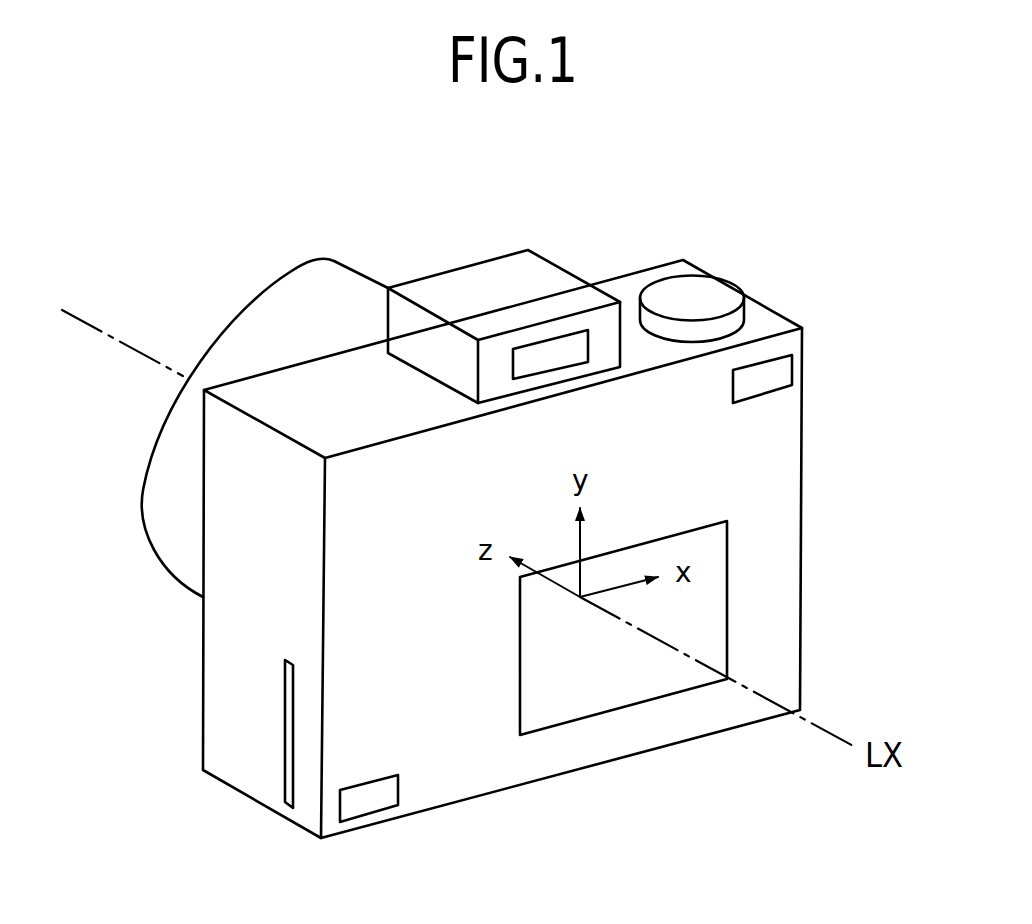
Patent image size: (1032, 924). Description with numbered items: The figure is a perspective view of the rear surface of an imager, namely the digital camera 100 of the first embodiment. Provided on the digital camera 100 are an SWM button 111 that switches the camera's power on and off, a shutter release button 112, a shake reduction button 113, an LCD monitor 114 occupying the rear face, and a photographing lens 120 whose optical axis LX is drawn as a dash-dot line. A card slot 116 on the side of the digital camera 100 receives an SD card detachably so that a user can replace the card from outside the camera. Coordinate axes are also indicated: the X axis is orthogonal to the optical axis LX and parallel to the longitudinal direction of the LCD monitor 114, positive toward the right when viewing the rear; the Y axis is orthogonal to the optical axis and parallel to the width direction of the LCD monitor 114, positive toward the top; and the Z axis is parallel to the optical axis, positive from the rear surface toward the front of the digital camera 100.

The digital camera 100 is at (688, 255).
The SWM button 111 is at (792, 363).
The shutter release button 112 is at (732, 280).
The shake reduction button 113 is at (371, 818).
The LCD monitor 114 is at (728, 560).
The card slot 116 is at (285, 808).
The photographing lens 120 is at (340, 262).